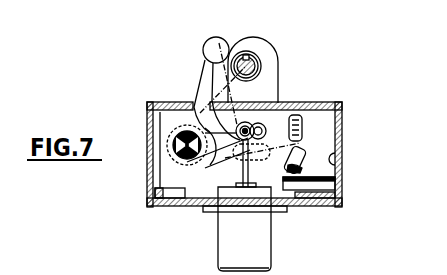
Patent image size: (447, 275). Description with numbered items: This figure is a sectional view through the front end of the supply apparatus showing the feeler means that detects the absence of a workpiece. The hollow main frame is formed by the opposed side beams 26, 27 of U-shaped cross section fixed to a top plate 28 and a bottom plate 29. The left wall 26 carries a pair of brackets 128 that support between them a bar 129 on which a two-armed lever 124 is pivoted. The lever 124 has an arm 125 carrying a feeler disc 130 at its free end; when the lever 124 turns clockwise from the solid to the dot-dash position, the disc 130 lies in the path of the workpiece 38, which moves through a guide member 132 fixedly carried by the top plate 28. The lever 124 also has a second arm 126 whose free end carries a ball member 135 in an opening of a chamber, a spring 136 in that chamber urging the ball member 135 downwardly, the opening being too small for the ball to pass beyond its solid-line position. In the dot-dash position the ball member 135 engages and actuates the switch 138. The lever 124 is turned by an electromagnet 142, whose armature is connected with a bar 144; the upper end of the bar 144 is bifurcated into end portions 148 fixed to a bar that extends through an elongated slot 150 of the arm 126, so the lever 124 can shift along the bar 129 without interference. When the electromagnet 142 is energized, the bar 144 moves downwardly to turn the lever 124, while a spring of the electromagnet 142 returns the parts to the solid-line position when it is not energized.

The side beam 27 is at (342, 152).
The top plate 28 is at (317, 103).
The bottom plate 29 is at (300, 205).
The left wall 26 is at (157, 190).
The workpiece 38 is at (247, 66).
The two-armed lever 124 is at (194, 70).
The arm 125 is at (203, 82).
The second arm 126 is at (188, 162).
The bracket 128 is at (165, 162).
The bar 129 is at (172, 144).
The feeler disc 130 is at (215, 47).
The guide member 132 is at (270, 67).
The ball member 135 is at (300, 140).
The spring 136 is at (301, 121).
The switch 138 is at (248, 176).
The electromagnet 142 is at (268, 251).
The bar 144 is at (243, 178).
The end portions 148 is at (246, 125).
The elongated slot 150 is at (260, 124).